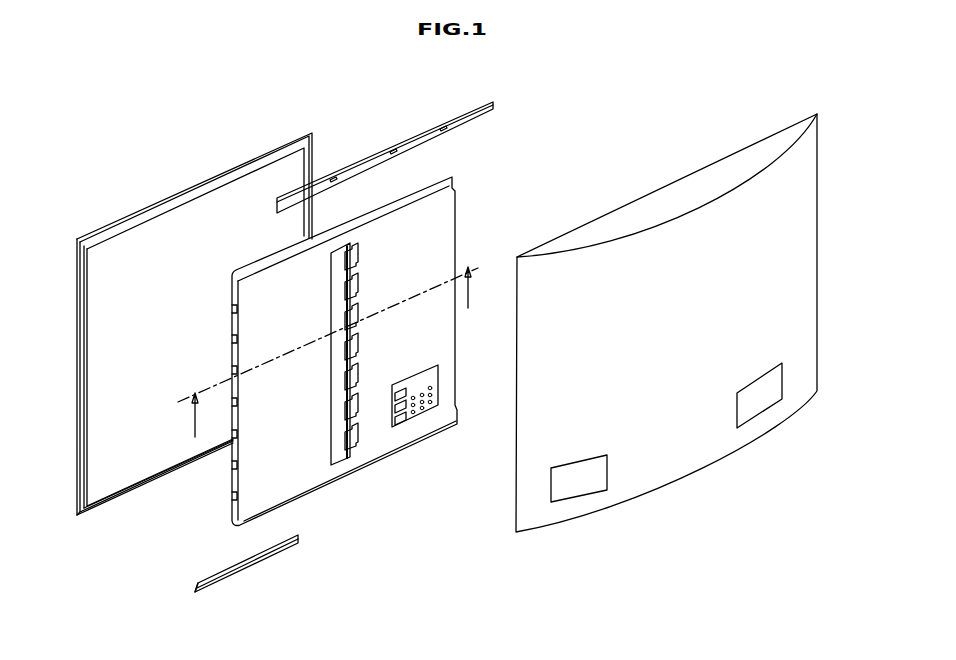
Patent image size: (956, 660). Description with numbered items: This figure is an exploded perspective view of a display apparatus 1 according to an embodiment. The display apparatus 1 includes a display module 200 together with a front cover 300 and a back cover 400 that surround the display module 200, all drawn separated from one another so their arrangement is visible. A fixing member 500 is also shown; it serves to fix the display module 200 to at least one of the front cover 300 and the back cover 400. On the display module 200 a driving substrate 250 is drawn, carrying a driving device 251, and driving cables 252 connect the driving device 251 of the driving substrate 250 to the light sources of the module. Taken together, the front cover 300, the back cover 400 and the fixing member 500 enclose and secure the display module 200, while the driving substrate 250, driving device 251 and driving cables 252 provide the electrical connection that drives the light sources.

The display apparatus 1 is at (186, 117).
The display module 200 is at (447, 225).
The driving substrate 250 is at (368, 354).
The driving device 251 is at (340, 318).
The driving cables 252 is at (353, 289).
The front cover 300 is at (133, 220).
The back cover 400 is at (699, 460).
The fixing member 500 is at (463, 113).